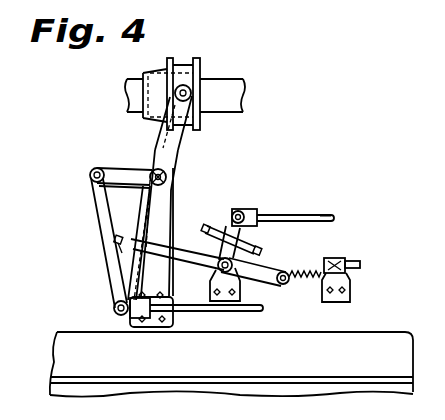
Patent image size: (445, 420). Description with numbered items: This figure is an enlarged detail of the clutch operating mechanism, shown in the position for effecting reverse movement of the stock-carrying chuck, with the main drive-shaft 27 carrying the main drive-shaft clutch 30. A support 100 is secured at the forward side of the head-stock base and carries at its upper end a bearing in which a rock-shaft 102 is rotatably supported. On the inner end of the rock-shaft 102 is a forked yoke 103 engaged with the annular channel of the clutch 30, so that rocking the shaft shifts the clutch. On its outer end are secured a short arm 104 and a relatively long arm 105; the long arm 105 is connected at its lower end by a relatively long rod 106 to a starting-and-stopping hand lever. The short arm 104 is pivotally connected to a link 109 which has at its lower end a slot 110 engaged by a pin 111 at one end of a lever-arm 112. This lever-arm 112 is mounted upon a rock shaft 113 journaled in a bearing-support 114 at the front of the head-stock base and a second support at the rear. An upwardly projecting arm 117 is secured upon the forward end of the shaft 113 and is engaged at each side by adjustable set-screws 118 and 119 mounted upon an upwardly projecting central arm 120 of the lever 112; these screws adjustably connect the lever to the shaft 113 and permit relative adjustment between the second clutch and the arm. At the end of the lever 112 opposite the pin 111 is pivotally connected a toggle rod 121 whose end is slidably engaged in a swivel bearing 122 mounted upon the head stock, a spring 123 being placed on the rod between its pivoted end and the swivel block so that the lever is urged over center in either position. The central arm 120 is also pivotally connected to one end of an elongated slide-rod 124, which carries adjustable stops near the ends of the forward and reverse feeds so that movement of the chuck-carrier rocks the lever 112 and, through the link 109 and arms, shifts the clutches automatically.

The shaft 27 is at (227, 87).
The main drive-shaft clutch 30 is at (188, 71).
The support 100 is at (157, 207).
The rock-shaft 102 is at (166, 174).
The forked yoke 103 is at (181, 149).
The short arm 104 is at (130, 167).
The long arm 105 is at (173, 194).
The rod 106 is at (258, 312).
The link 109 is at (98, 192).
The slot 110 is at (123, 255).
The pin 111 is at (116, 237).
The lever-arm 112 is at (193, 249).
The rock shaft 113 is at (215, 268).
The bearing-support 114 is at (260, 287).
The upwardly projecting arm 117 is at (259, 252).
The set-screw 118 is at (221, 222).
The set-screw 119 is at (257, 222).
The central arm 120 is at (258, 215).
The toggle rod 121 is at (358, 258).
The swivel bearing 122 is at (350, 274).
The spring 123 is at (318, 258).
The slide-rod 124 is at (317, 217).